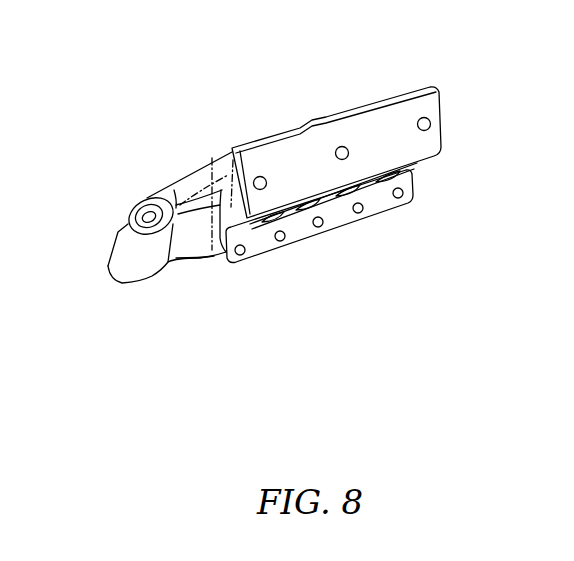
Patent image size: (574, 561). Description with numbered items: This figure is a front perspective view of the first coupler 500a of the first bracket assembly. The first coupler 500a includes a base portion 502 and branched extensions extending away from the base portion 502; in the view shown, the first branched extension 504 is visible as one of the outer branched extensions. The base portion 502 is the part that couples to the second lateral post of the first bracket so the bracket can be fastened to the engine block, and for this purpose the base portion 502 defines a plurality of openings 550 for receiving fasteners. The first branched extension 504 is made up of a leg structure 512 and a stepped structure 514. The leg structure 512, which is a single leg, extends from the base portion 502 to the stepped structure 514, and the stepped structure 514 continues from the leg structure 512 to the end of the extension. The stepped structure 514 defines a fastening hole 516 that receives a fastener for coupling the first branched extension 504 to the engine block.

The first coupler 500a is at (123, 45).
The base portion 502 is at (441, 103).
The first branched extension 504 is at (120, 282).
The leg structure 512 is at (198, 262).
The stepped structure 514 is at (112, 238).
The fastening hole 516 is at (150, 212).
The openings 550 is at (266, 178).